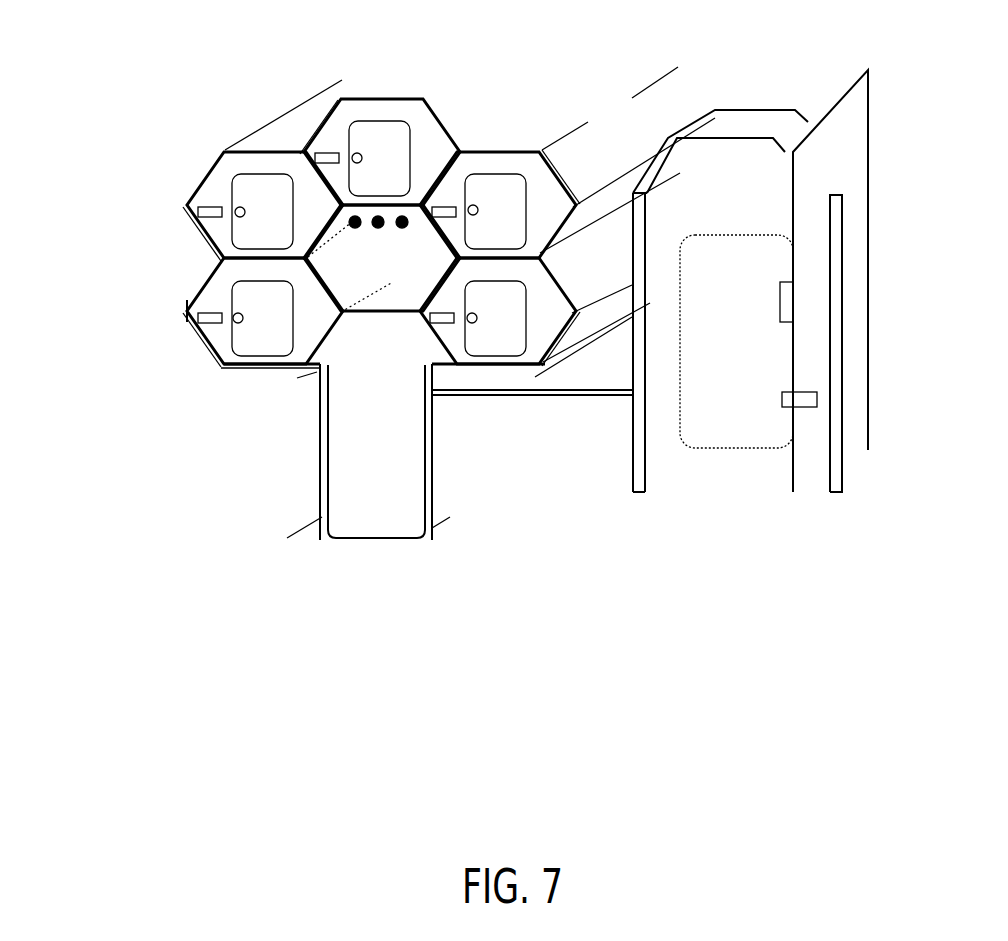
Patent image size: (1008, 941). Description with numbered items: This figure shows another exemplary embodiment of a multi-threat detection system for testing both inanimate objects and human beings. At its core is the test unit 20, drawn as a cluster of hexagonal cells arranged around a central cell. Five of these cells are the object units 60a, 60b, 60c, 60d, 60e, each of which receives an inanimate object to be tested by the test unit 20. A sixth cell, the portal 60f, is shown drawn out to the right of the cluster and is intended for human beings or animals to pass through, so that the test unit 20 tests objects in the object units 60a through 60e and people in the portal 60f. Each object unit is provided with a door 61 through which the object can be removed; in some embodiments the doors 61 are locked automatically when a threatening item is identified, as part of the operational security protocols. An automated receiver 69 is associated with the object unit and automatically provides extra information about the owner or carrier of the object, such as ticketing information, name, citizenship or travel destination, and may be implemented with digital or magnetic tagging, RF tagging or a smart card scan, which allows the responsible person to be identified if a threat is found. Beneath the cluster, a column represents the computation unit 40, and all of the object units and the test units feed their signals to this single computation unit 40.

The test unit 20 is at (298, 152).
The computation unit 40 is at (352, 435).
The object unit 60a is at (217, 343).
The object unit 60b is at (225, 190).
The object unit 60c is at (387, 120).
The object unit 60d is at (480, 173).
The object unit 60e is at (528, 350).
The portal 60f is at (747, 120).
The door 61 is at (240, 330).
The automated receiver 69 is at (193, 307).